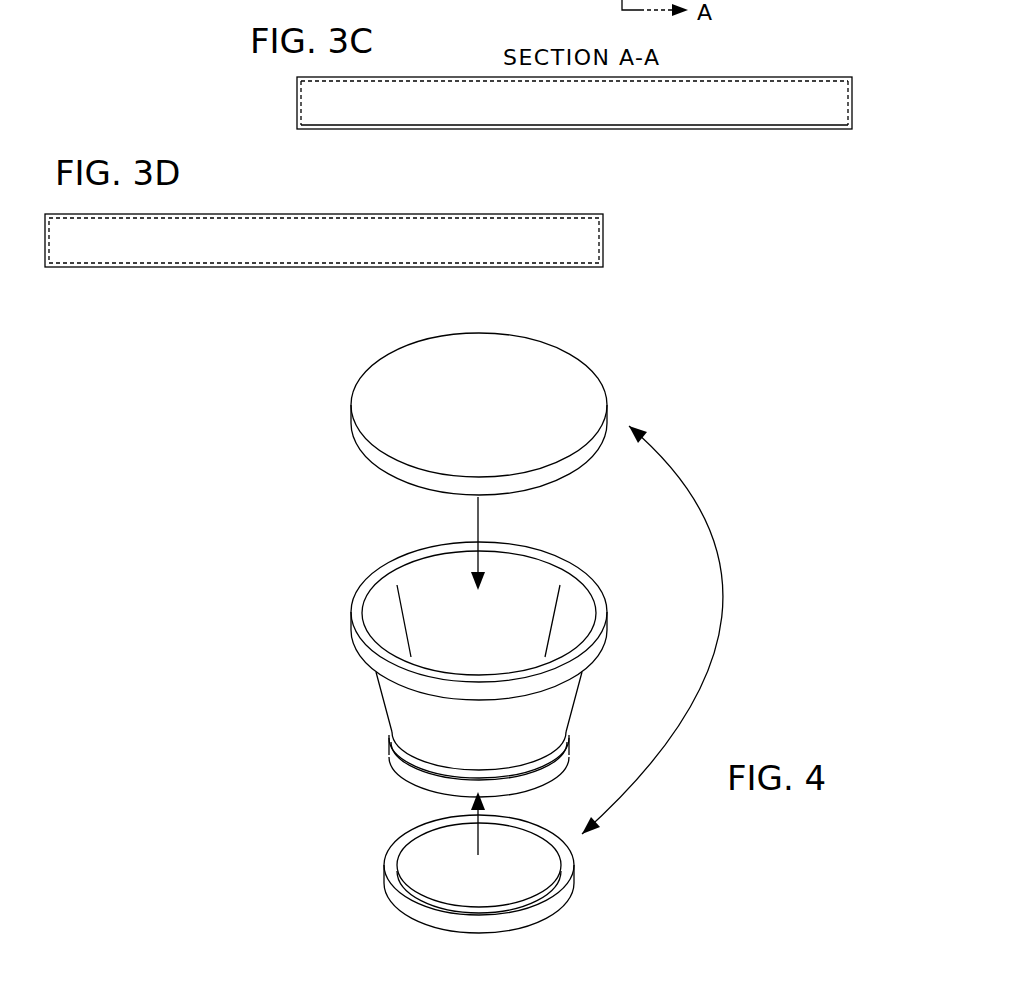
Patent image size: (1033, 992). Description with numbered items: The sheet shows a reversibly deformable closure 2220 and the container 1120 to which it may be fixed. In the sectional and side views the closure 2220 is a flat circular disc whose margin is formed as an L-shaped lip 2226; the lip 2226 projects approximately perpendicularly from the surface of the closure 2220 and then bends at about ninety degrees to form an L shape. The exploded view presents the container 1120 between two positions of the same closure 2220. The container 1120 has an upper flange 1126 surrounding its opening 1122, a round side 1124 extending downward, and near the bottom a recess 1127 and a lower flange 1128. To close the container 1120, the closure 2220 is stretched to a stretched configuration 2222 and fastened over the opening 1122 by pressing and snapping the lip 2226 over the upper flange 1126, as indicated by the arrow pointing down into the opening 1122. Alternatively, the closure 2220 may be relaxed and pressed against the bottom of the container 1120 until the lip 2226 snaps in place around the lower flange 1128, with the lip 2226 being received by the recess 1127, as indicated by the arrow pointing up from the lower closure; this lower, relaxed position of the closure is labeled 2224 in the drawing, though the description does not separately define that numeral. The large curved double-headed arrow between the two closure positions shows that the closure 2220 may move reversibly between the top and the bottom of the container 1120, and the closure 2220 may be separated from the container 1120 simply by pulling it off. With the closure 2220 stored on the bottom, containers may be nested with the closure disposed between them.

In FIG. 3C, the closure 2220 is at (816, 77).
In FIG. 3D, the closure 2220 is at (560, 215).
In FIG. 4, the closure 2220 is at (473, 403).
In FIG. 4, the stretched configuration 2222 is at (610, 425).
In FIG. 4, the base cap 2224 is at (562, 900).
In FIG. 3C, the L-shaped lip 2226 is at (846, 130).
In FIG. 3D, the L-shaped lip 2226 is at (62, 267).
In FIG. 4, the L-shaped lip 2226 is at (572, 480).
In FIG. 4, the container 1120 is at (383, 705).
In FIG. 4, the opening 1122 is at (440, 582).
In FIG. 4, the round side 1124 is at (500, 743).
In FIG. 4, the upper flange 1126 is at (365, 657).
In FIG. 4, the recess 1127 is at (400, 765).
In FIG. 4, the lower flange 1128 is at (405, 775).